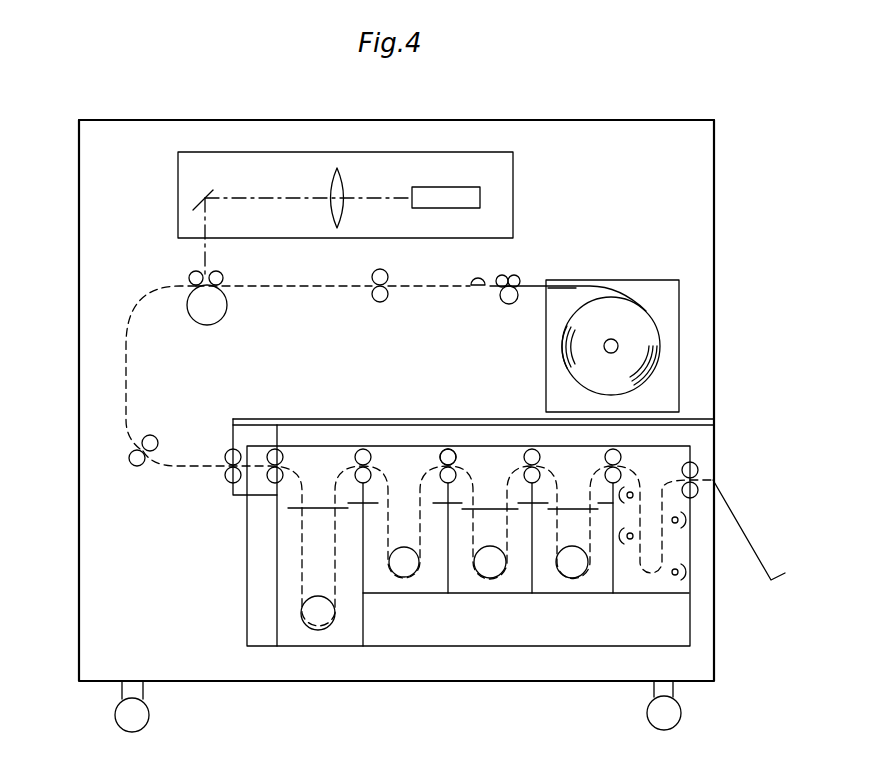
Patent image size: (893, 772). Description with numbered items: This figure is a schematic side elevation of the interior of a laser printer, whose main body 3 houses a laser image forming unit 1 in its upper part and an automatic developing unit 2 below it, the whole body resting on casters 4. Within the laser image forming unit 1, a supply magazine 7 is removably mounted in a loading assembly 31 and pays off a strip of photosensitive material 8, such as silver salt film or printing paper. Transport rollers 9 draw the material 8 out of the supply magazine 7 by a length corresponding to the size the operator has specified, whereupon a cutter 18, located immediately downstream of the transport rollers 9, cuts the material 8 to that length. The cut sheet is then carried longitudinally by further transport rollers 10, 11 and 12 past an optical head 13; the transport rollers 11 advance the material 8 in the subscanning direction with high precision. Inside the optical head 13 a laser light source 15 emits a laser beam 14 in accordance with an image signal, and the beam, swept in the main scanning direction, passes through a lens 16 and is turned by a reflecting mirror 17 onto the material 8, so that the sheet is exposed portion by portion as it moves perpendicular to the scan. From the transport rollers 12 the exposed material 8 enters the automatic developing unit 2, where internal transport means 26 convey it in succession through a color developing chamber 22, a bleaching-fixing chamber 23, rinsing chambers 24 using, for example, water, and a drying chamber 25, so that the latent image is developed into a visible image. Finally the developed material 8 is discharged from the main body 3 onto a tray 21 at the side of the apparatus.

The laser image forming unit 1 is at (302, 133).
The automatic developing unit 2 is at (500, 645).
The main body 3 is at (72, 283).
The casters 4 is at (140, 722).
The supply magazine 7 is at (679, 391).
The photosensitive material 8 is at (302, 288).
The transport rollers 9 is at (513, 306).
The transport rollers 10 is at (368, 298).
The transport rollers 11 is at (237, 305).
The transport rollers 12 is at (142, 476).
The optical head 13 is at (519, 172).
The laser beam 14 is at (209, 251).
The laser light source 15 is at (465, 172).
The lens 16 is at (355, 176).
The reflecting mirror 17 is at (212, 190).
The cutter 18 is at (472, 281).
The tray 21 is at (740, 521).
The color developing chamber 22 is at (355, 632).
The bleaching-fixing chamber 23 is at (421, 586).
The rinsing chambers 24 is at (515, 586).
The drying chamber 25 is at (649, 586).
The transport means 26 is at (458, 457).
The loading assembly 31 is at (592, 276).